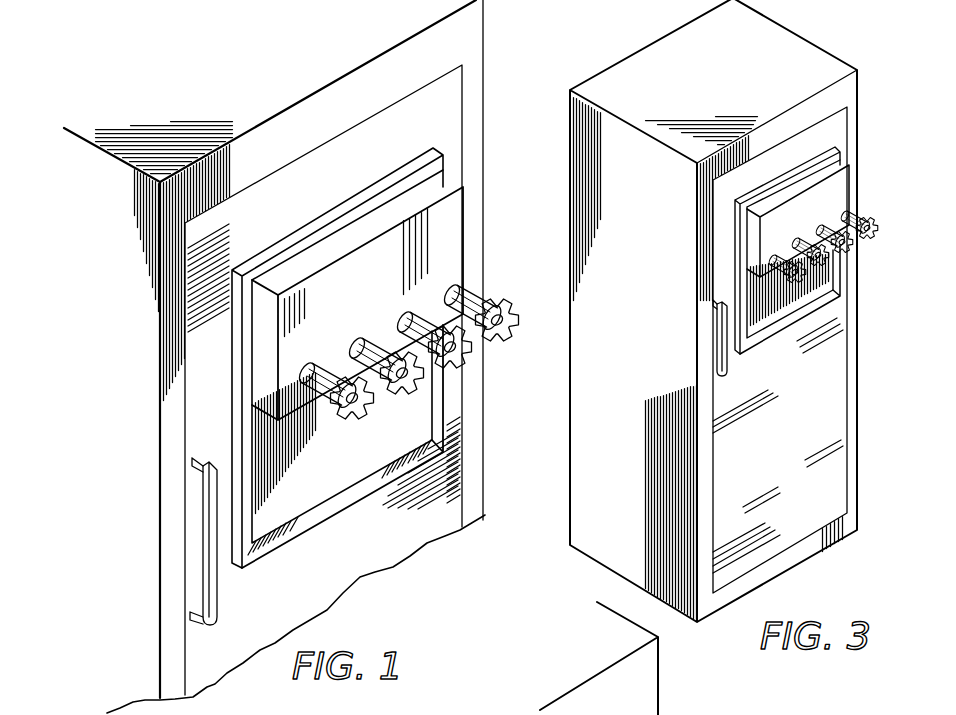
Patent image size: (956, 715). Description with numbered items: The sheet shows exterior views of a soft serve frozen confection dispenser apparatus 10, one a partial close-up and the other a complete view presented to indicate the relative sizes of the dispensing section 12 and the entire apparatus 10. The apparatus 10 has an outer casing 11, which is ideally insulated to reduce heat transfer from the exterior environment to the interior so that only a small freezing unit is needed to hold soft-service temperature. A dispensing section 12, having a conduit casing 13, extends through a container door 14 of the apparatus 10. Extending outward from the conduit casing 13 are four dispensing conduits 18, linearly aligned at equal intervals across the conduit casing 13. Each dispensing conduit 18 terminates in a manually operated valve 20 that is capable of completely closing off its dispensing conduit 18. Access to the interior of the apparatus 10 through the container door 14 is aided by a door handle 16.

In FIG. 1, the soft serve frozen confection dispenser apparatus 10 is at (160, 109).
In FIG. 3, the soft serve frozen confection dispenser apparatus 10 is at (604, 66).
In FIG. 3, the outer casing 11 is at (822, 65).
In FIG. 1, the dispensing section 12 is at (452, 237).
In FIG. 3, the dispensing section 12 is at (818, 203).
In FIG. 1, the conduit casing 13 is at (446, 181).
In FIG. 3, the conduit casing 13 is at (833, 162).
In FIG. 1, the container door 14 is at (356, 545).
In FIG. 3, the container door 14 is at (805, 428).
In FIG. 1, the door handle 16 is at (214, 588).
In FIG. 3, the door handle 16 is at (730, 360).
In FIG. 1, the dispensing conduit 18 is at (463, 290).
In FIG. 3, the dispensing conduit 18 is at (853, 210).
In FIG. 1, the manually operated valve 20 is at (501, 300).
In FIG. 3, the manually operated valve 20 is at (870, 240).